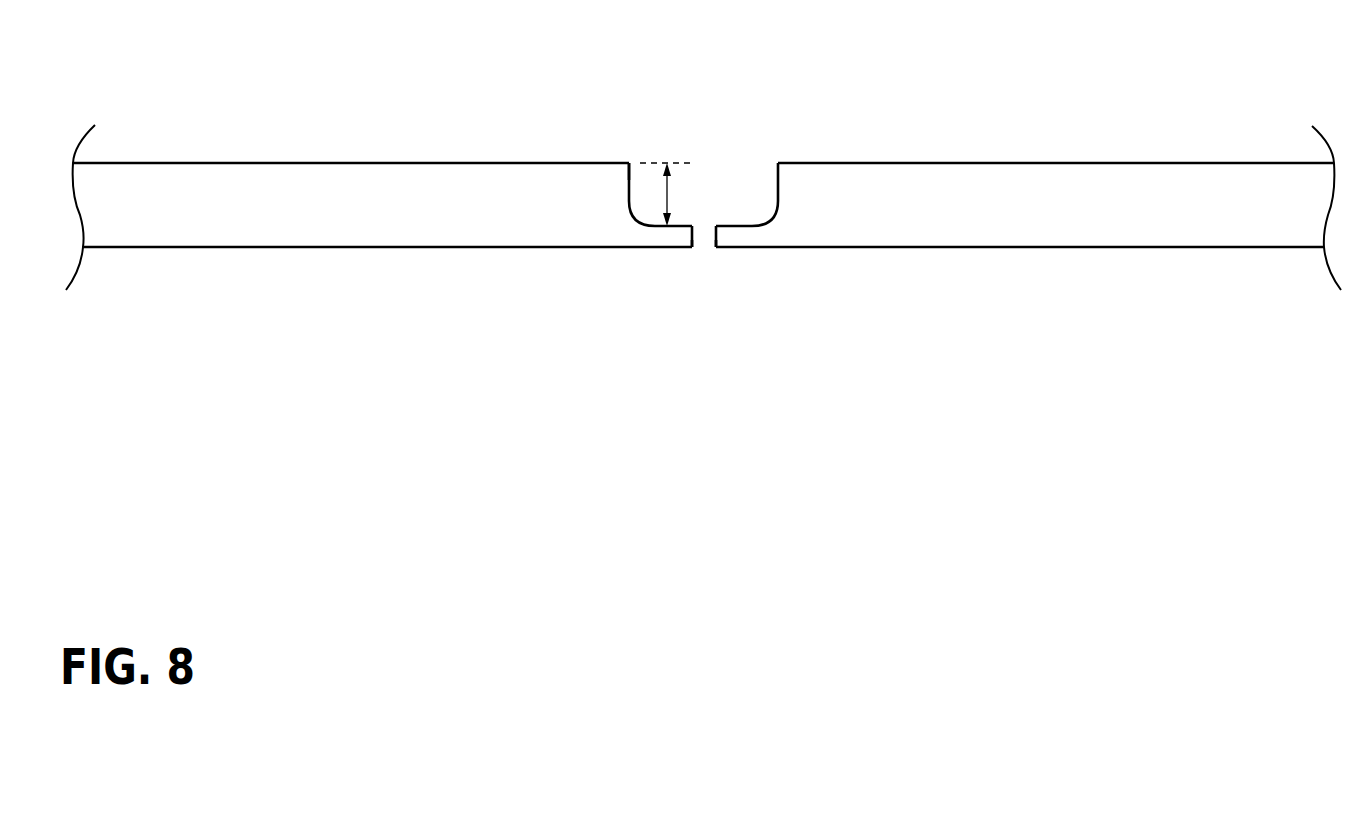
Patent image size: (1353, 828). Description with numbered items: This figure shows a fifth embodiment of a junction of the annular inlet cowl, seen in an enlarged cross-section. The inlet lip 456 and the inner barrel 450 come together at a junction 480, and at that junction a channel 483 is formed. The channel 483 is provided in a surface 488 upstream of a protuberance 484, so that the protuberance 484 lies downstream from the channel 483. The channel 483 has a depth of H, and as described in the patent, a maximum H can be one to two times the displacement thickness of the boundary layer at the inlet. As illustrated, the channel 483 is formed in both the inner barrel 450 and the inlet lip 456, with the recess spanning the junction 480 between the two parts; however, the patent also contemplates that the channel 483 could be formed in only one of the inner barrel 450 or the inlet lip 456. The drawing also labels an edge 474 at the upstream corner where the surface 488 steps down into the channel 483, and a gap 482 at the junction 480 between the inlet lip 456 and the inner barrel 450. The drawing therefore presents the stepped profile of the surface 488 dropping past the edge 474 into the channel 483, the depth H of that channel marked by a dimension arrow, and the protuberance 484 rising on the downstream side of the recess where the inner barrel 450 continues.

The inner barrel 450 is at (963, 192).
The inlet lip 456 is at (310, 226).
The recess corner edge 474 is at (629, 176).
The junction 480 is at (703, 258).
The slot 482 is at (712, 235).
The channel 483 is at (708, 186).
The protuberance 484 is at (782, 182).
The surface 488 is at (332, 163).
The depth H is at (665, 190).